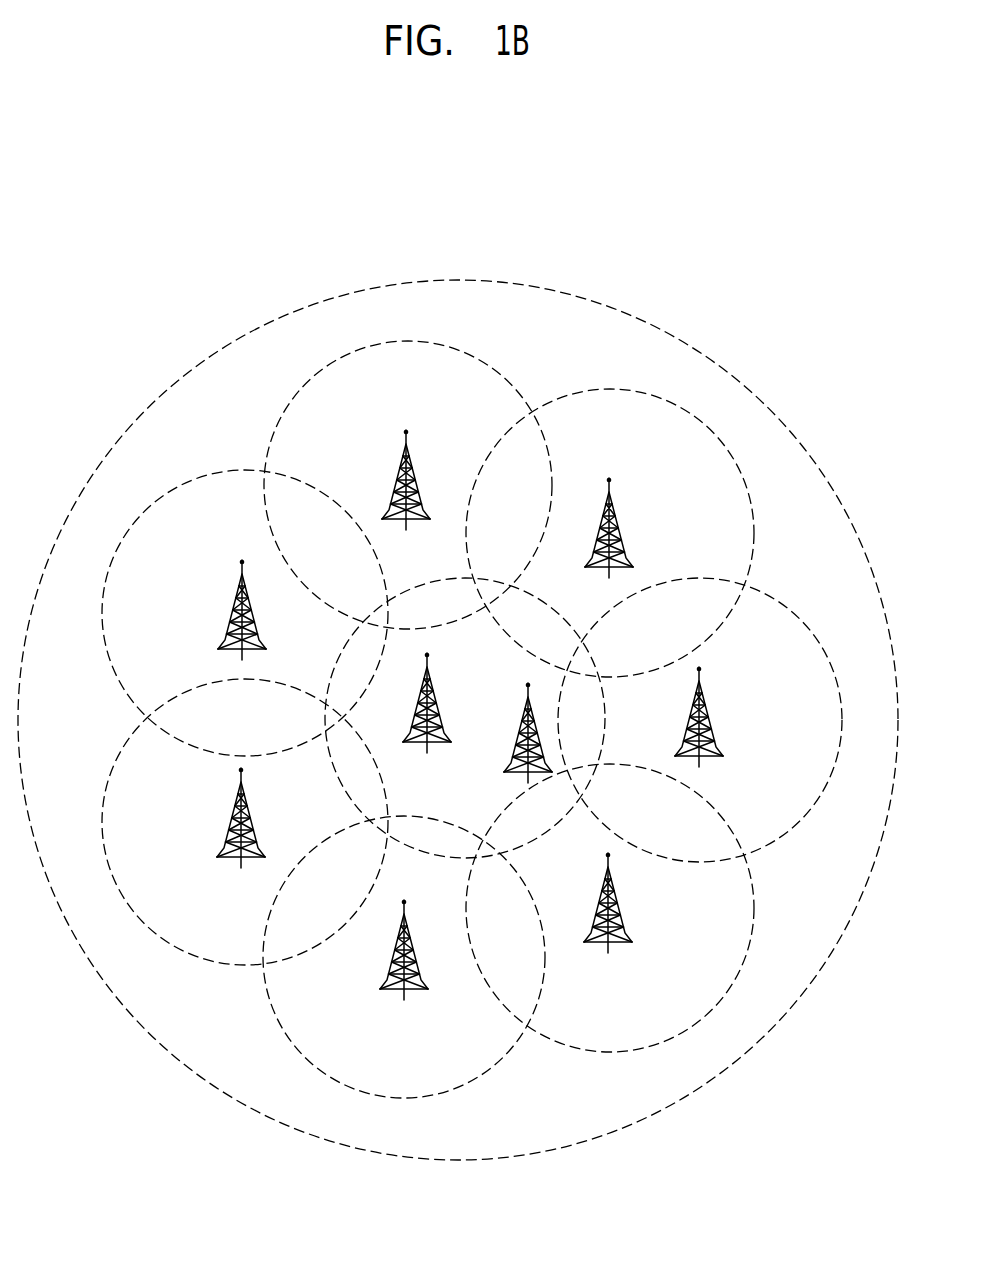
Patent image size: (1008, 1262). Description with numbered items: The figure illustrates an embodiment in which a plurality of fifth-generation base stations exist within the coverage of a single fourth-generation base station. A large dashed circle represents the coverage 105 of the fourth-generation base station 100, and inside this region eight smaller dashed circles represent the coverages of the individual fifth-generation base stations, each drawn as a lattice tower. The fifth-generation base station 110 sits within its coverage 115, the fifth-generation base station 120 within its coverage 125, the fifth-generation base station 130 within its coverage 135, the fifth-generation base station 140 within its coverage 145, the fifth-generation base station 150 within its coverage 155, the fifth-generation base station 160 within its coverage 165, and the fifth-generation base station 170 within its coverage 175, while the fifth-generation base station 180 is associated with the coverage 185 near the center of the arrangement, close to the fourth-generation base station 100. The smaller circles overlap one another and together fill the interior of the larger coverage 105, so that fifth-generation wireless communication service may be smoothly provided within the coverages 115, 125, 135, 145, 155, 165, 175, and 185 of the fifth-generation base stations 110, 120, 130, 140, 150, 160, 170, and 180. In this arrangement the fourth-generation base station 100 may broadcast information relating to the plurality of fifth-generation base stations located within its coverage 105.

The 4G base station 100 is at (440, 678).
The coverage of the 4G base station 105 is at (627, 310).
The 5G base station 110 is at (712, 712).
The coverage of the 5G base station 115 is at (795, 608).
The 5G base station 120 is at (622, 525).
The coverage of the 5G base station 125 is at (612, 390).
The 5G base station 130 is at (418, 476).
The coverage of the 5G base station 135 is at (490, 362).
The 5G base station 140 is at (232, 605).
The coverage of the 5G base station 145 is at (200, 476).
The 5G base station 150 is at (230, 812).
The coverage of the 5G base station 155 is at (113, 762).
The 5G base station 160 is at (418, 985).
The coverage of the 5G base station 165 is at (288, 1040).
The 5G base station 170 is at (620, 940).
The coverage of the 5G base station 175 is at (755, 906).
The 5G base station 180 is at (510, 735).
The coverage of the 5G base station 185 is at (605, 718).